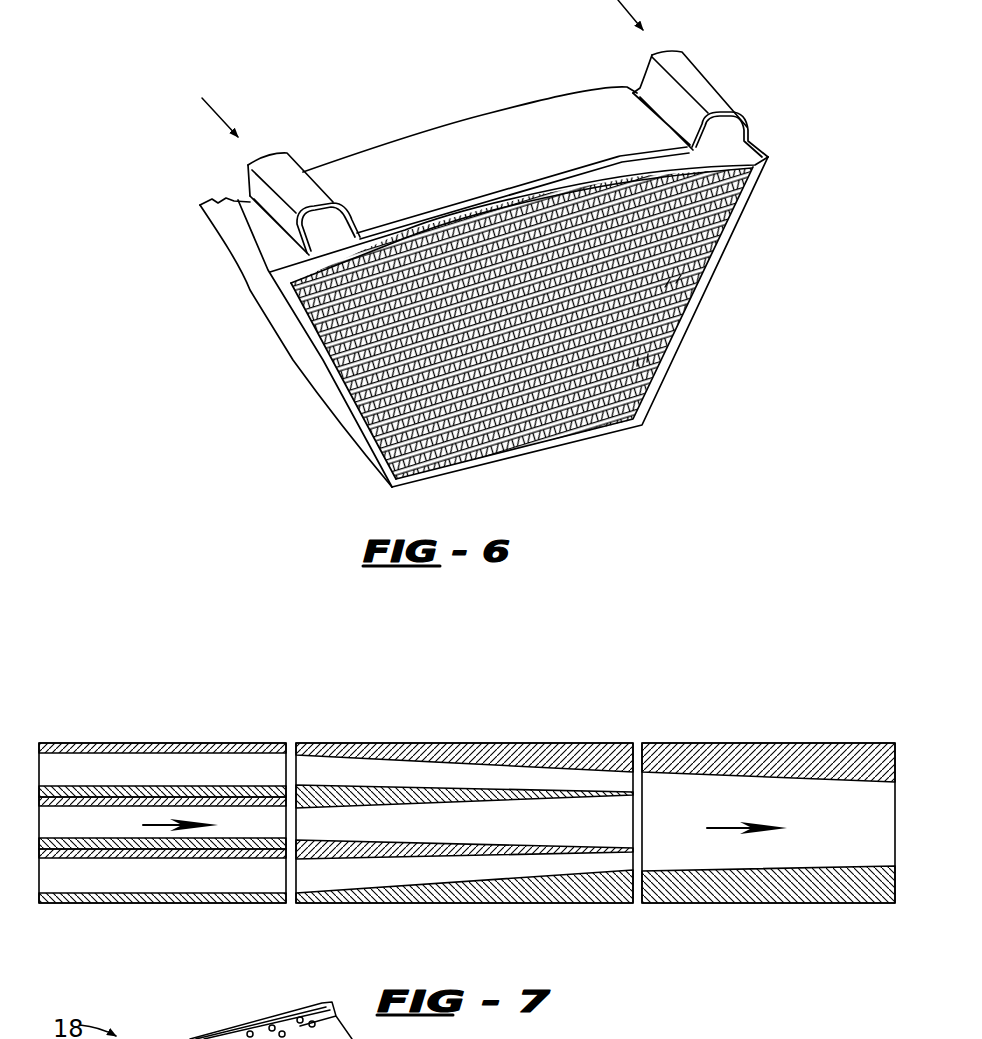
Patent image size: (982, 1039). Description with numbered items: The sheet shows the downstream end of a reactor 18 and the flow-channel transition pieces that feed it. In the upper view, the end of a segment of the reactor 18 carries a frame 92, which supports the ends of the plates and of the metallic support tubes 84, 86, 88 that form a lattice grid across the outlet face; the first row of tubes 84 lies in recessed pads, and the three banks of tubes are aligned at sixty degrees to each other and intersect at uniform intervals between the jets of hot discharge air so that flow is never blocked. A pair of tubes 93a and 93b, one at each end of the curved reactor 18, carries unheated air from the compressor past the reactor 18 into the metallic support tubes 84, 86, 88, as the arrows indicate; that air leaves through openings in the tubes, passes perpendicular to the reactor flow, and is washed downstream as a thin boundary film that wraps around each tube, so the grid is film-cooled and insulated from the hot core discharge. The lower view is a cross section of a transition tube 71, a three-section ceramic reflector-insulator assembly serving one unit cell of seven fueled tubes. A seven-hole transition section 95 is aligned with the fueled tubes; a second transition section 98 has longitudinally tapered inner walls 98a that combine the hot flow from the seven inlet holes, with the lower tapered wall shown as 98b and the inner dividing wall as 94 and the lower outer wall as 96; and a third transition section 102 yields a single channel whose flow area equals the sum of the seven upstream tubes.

In FIG. 6, the reactor 18 is at (452, 123).
In FIG. 6, the tube 93a is at (268, 163).
In FIG. 6, the tube 93b is at (682, 65).
In FIG. 6, the metallic support tubes 84 is at (727, 193).
In FIG. 6, the metallic support tubes 86 is at (680, 280).
In FIG. 6, the metallic support tubes 88 is at (648, 357).
In FIG. 6, the frame 92 is at (307, 360).
In FIG. 7, the transition tubes 71 is at (434, 722).
In FIG. 7, the inner tube 94 is at (105, 786).
In FIG. 7, the transition section 95 is at (222, 743).
In FIG. 7, the outer tube lower wall 96 is at (205, 903).
In FIG. 7, the second transition section 98 is at (548, 744).
In FIG. 7, the tapered inner walls 98a is at (492, 803).
In FIG. 7, the tapered inner wall 98b is at (563, 851).
In FIG. 7, the third transition section 102 is at (800, 744).